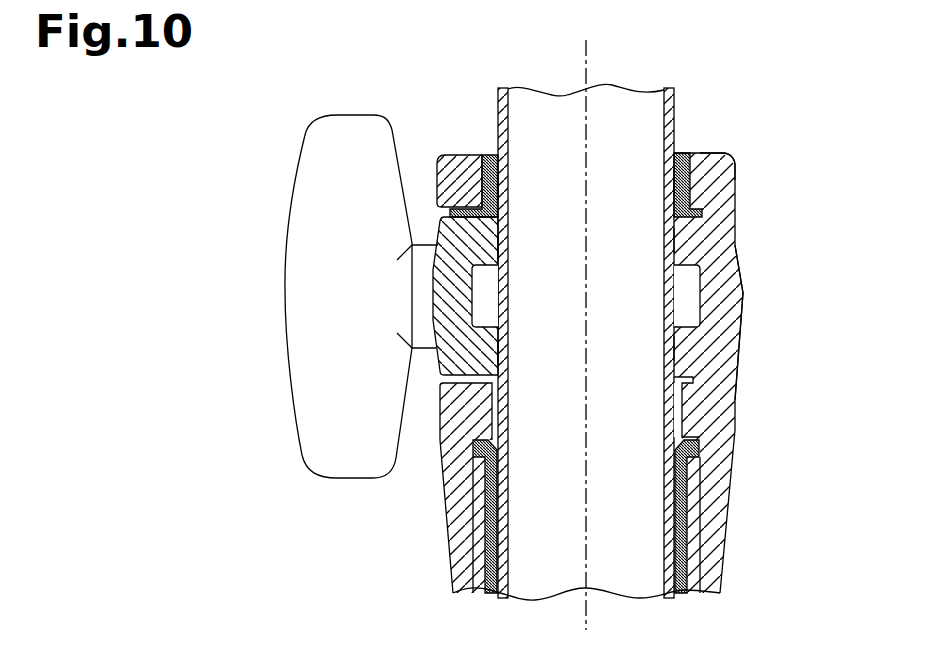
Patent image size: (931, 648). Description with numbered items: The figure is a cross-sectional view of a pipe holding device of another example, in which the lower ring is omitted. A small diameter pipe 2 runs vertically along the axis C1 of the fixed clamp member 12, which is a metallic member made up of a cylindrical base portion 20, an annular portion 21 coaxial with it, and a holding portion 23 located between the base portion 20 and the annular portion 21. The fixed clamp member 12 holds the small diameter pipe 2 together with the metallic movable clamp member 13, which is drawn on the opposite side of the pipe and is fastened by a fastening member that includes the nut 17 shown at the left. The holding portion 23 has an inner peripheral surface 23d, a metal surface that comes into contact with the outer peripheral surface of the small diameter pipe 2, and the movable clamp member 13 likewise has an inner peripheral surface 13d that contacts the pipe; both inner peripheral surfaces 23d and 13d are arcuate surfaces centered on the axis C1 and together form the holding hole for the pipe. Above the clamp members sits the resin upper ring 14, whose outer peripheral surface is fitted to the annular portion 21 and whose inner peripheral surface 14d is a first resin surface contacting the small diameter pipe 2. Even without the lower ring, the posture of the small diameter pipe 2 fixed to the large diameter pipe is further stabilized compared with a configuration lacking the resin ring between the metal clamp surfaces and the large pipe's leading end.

The axis C1 is at (587, 57).
The small diameter pipe 2 is at (690, 517).
The fixed clamp member 12 is at (738, 252).
The movable clamp member 13 is at (430, 297).
The inner peripheral surface 13d is at (502, 247).
The upper ring 14 is at (697, 178).
The inner peripheral surface 14d is at (502, 187).
The nut 17 is at (292, 430).
The base portion 20 is at (725, 557).
The annular portion 21 is at (722, 153).
The holding portion 23 is at (745, 293).
The inner peripheral surface 23d is at (675, 240).